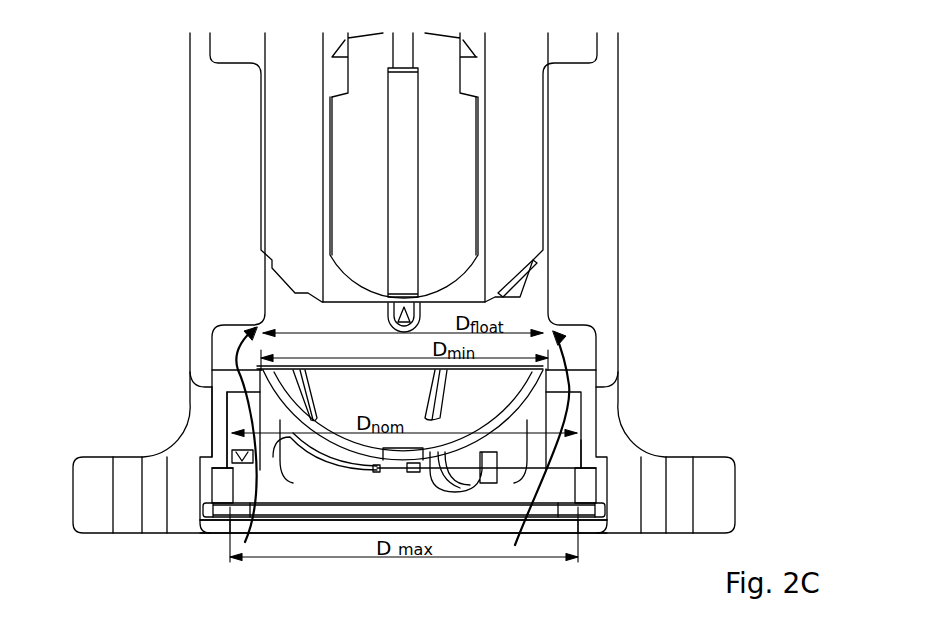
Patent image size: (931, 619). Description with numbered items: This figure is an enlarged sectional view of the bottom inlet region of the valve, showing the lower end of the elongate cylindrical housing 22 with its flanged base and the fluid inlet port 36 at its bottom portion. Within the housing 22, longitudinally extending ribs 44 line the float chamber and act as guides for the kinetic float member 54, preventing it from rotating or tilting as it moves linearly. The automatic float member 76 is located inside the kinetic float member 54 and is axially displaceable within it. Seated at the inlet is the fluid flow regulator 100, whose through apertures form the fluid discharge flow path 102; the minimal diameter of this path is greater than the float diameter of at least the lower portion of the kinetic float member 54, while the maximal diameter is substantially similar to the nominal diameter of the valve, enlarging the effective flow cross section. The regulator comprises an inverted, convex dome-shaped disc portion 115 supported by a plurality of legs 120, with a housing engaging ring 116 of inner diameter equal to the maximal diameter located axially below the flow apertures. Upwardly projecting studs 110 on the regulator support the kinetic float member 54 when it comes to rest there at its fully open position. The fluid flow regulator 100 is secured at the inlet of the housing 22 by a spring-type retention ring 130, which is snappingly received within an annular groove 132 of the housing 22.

The housing 22 is at (223, 145).
The longitudinally extending ribs 44 is at (587, 120).
The automatic float member 76 is at (442, 180).
The kinetic float member 54 is at (508, 233).
The upwardly projecting studs 110 is at (440, 393).
The fluid discharge flow path 102 is at (563, 405).
The dome-shaped disc portion 115 is at (583, 448).
The housing engaging ring 116 is at (583, 487).
The spring-type retention ring 130 is at (577, 512).
The fluid inlet port 36 is at (587, 527).
The annular groove 132 is at (232, 528).
The fluid flow regulator 100 is at (278, 417).
The legs 120 is at (283, 475).